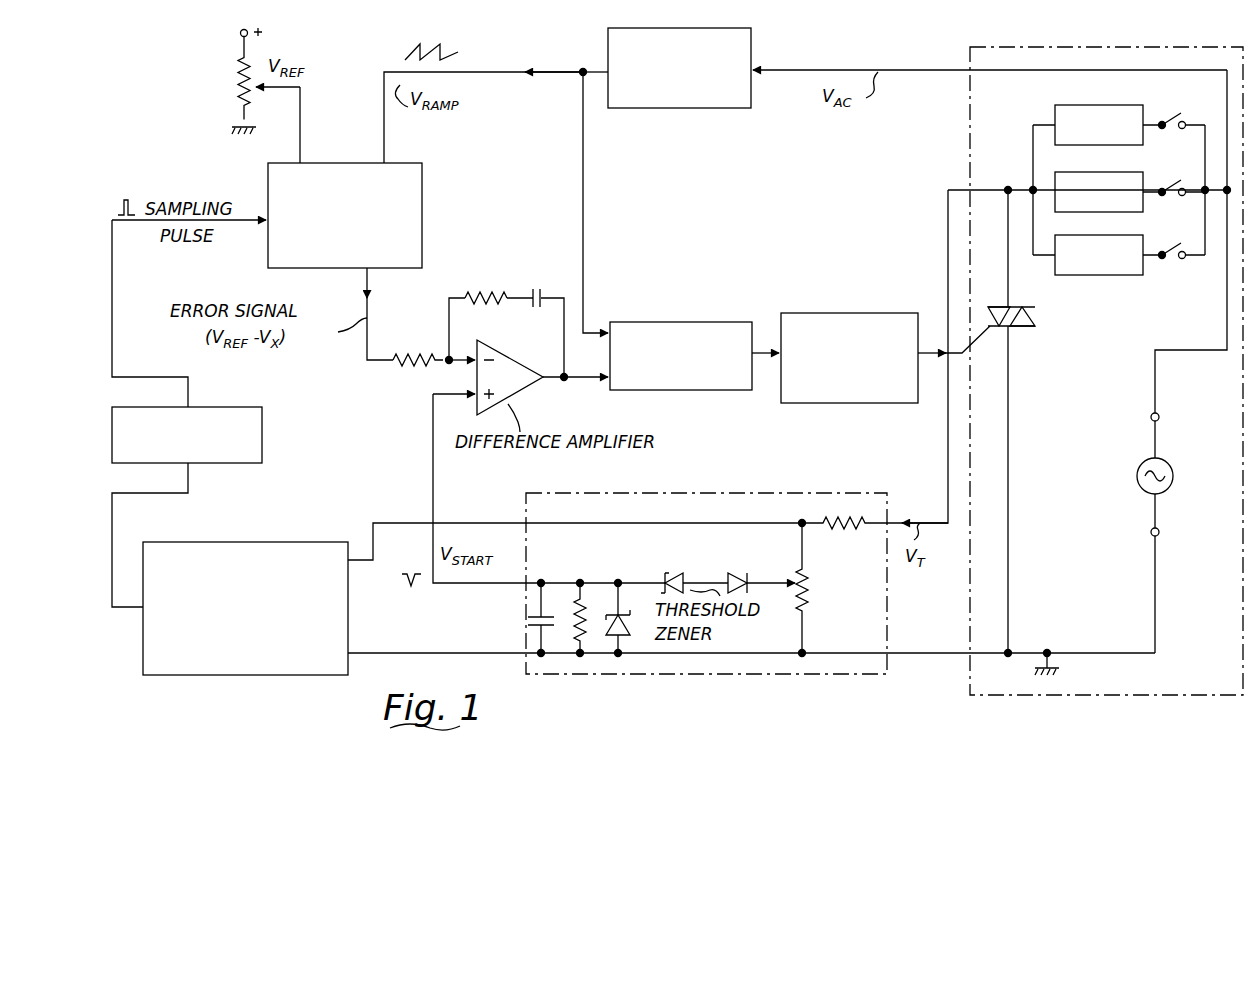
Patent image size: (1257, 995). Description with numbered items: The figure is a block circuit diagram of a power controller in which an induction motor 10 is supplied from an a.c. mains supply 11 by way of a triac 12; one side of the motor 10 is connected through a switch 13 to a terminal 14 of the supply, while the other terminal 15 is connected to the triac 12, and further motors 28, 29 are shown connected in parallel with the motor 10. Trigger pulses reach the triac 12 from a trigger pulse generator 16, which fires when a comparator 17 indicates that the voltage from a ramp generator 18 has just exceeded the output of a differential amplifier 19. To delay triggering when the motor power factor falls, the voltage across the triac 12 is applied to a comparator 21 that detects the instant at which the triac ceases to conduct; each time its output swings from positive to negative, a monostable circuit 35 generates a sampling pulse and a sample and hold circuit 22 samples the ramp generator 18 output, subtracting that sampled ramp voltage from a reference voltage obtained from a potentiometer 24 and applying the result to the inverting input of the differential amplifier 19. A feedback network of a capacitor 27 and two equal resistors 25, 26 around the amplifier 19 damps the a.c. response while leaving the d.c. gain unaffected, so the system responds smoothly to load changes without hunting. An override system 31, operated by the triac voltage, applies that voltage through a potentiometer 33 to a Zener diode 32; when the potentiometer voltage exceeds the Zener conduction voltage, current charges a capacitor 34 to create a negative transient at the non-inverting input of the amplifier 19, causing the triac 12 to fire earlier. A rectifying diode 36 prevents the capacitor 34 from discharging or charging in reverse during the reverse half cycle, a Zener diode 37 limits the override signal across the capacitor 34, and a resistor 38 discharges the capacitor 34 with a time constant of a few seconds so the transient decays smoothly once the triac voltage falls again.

The induction motor 10 is at (1054, 172).
The a.c. mains supply 11 is at (1136, 477).
The triac 12 is at (1028, 327).
The switch 13 is at (1176, 183).
The terminal 14 is at (1150, 417).
The terminal 15 is at (1150, 532).
The trigger pulse generator 16 is at (856, 313).
The comparator 17 is at (694, 322).
The ramp generator 18 is at (679, 108).
The differential amplifier 19 is at (510, 356).
The comparator 21 is at (307, 542).
The sample and hold circuit 22 is at (422, 200).
The potentiometer 24 is at (240, 77).
The resistor 25 is at (409, 362).
The resistor 26 is at (486, 298).
The capacitor 27 is at (542, 290).
The motor 28 is at (1052, 108).
The motor 29 is at (1112, 276).
The override system 31 is at (818, 493).
The Zener diode 32 is at (685, 573).
The potentiometer 33 is at (812, 594).
The capacitor 34 is at (532, 618).
The monostable circuit 35 is at (262, 432).
The rectifying diode 36 is at (739, 574).
The Zener diode 37 is at (628, 584).
The resistor 38 is at (584, 584).